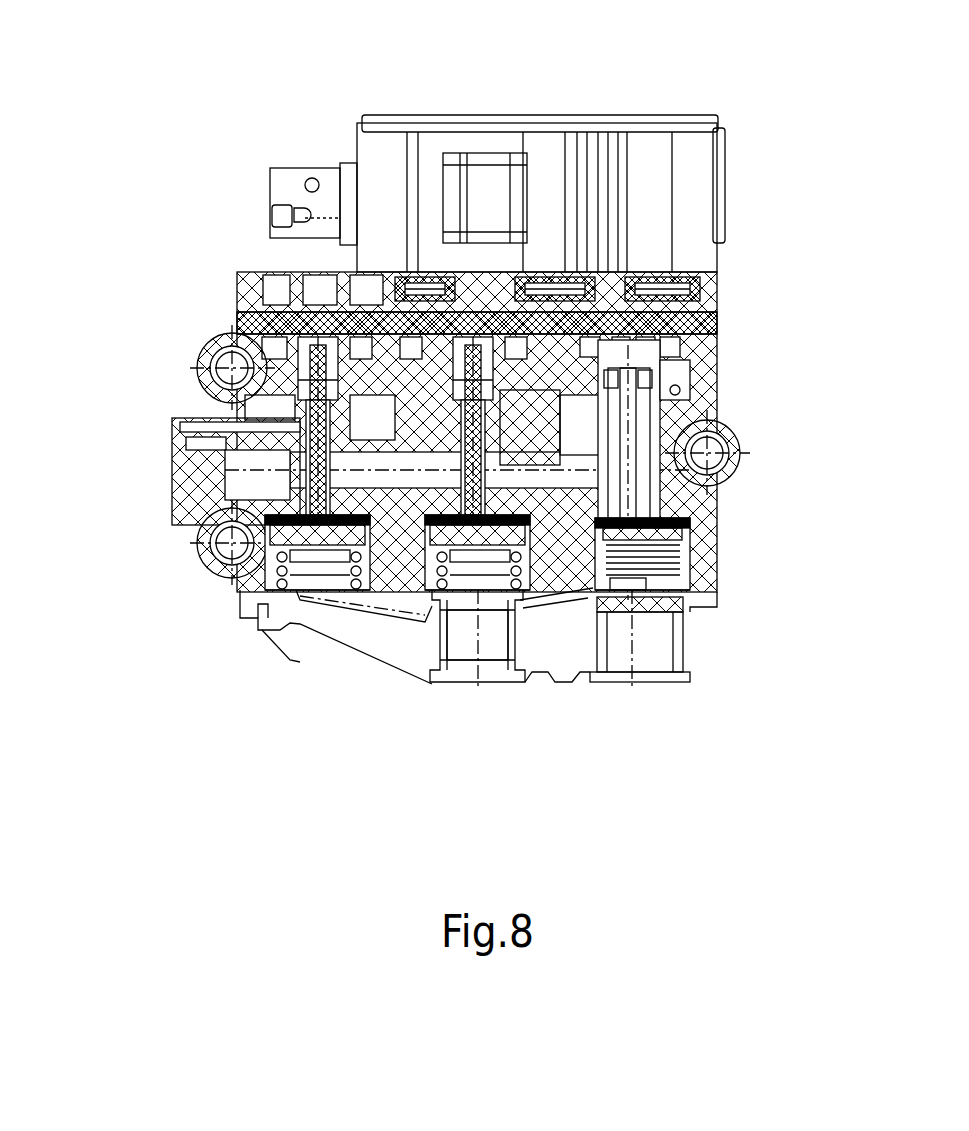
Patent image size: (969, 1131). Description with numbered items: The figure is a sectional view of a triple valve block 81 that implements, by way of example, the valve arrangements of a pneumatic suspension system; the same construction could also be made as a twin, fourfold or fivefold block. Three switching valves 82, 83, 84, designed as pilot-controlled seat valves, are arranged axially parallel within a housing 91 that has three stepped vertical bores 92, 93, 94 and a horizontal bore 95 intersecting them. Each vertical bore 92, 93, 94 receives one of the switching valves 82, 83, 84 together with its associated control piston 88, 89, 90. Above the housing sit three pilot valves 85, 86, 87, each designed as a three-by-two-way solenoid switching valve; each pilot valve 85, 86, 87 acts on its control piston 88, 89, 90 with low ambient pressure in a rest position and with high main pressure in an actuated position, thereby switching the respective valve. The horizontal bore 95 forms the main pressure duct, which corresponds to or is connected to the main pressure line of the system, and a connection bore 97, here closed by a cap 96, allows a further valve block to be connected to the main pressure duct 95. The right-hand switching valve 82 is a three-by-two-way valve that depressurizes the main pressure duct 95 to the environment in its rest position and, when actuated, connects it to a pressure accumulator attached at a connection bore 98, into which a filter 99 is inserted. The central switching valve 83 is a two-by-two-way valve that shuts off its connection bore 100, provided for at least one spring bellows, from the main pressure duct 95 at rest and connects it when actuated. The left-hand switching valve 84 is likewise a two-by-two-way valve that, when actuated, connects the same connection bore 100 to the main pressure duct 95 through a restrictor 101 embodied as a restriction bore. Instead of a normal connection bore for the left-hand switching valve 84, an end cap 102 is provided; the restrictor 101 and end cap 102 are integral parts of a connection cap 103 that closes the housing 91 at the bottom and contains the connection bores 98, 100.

The valve block 81 is at (207, 100).
The switching valve 82 is at (632, 695).
The switching valve 83 is at (478, 695).
The switching valve 84 is at (321, 665).
The pilot valve 85 is at (662, 150).
The pilot valve 86 is at (545, 150).
The pilot valve 87 is at (430, 150).
The control piston 88 is at (677, 375).
The control piston 89 is at (530, 396).
The control piston 90 is at (240, 410).
The housing 91 is at (687, 477).
The vertical bore 92 is at (655, 512).
The vertical bore 93 is at (528, 580).
The vertical bore 94 is at (368, 585).
The horizontal bore 95 is at (228, 456).
The cap 96 is at (247, 487).
The connection bore 97 is at (225, 540).
The connection bore 98 is at (653, 645).
The filter 99 is at (667, 607).
The connection bore 100 is at (498, 648).
The restrictor 101 is at (403, 627).
The end cap 102 is at (350, 627).
The connection cap 103 is at (567, 617).